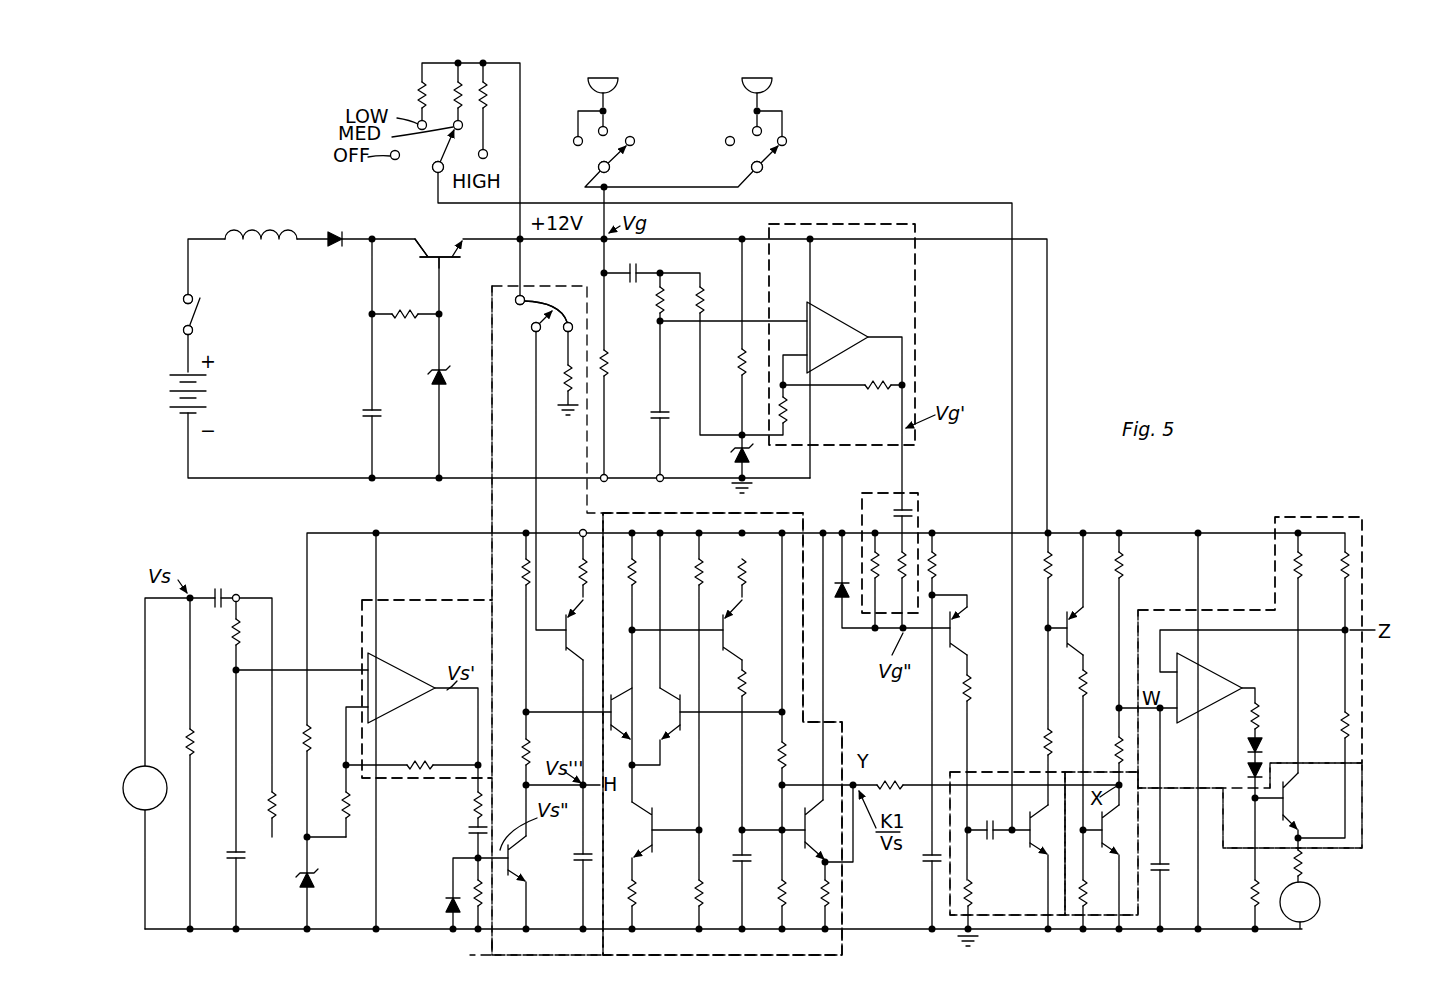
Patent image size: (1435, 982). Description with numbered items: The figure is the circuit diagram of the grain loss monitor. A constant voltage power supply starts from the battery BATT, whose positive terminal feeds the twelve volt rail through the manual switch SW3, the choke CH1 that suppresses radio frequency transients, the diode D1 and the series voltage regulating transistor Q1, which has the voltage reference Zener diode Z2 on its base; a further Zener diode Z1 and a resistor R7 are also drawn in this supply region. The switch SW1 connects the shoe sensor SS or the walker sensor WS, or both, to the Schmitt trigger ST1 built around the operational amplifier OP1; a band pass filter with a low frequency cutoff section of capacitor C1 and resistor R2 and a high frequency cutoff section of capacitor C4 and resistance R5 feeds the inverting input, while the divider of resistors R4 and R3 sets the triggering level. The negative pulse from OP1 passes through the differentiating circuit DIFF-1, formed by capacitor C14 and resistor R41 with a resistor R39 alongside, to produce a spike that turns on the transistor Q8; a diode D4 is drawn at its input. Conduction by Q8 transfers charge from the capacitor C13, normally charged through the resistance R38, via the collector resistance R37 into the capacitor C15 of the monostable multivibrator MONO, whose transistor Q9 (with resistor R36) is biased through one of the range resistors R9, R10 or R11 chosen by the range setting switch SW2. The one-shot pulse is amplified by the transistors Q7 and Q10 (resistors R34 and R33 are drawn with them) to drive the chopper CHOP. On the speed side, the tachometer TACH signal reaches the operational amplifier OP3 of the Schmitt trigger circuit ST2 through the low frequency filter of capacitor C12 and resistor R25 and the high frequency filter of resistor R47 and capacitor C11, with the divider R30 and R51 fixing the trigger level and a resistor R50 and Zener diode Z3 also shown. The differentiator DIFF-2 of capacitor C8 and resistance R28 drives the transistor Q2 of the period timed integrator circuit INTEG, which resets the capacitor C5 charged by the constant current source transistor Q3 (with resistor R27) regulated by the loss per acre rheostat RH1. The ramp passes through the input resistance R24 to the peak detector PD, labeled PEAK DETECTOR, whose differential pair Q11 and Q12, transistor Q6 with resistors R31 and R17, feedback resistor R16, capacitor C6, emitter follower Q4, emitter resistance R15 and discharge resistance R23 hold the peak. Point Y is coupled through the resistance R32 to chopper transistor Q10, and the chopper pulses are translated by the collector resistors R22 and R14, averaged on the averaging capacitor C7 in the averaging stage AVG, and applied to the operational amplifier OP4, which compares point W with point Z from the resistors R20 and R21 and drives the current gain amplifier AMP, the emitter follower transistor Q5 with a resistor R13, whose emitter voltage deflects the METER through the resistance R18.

The range resistor R11 is at (420, 92).
The range resistor R10 is at (460, 92).
The range resistor R9 is at (498, 88).
The range setting switch SW2 is at (434, 170).
The shoe sensor SS is at (618, 80).
The walker sensor WS is at (772, 80).
The sensor selector switch SW1 is at (770, 152).
The choke CH1 is at (255, 232).
The diode D1 is at (334, 231).
The series voltage regulating transistor Q1 is at (438, 240).
The manual switch SW3 is at (197, 316).
The unidirectional voltage source BATT is at (218, 394).
The voltage reference Zener diode Z2 is at (443, 385).
The loss per acre setting rheostat RH1 is at (532, 295).
The capacitor C1 is at (632, 262).
The resistor R2 is at (704, 290).
The resistance R5 is at (657, 312).
The capacitor C4 is at (655, 412).
The resistor R7 is at (738, 362).
The Zener diode Z1 is at (735, 455).
The operational amplifier OP1 is at (837, 337).
The feedback resistor R4 is at (869, 372).
The divider resistor R3 is at (790, 413).
The Schmitt trigger ST1 is at (916, 305).
The capacitor C14 is at (900, 506).
The differentiating circuit DIFF-1 is at (926, 544).
The resistor R39 is at (843, 541).
The resistor R41 is at (910, 552).
The resistance R38 is at (938, 563).
The transistor Q8 is at (971, 631).
The collector resistance R37 is at (962, 698).
The diode D4 is at (840, 606).
The collector resistor R14 is at (1123, 560).
The transistor Q7 is at (1082, 631).
The resistor R34 is at (1086, 676).
The collector resistor R22 is at (1116, 750).
The averaging circuit AVG is at (1228, 601).
The operational amplifier OP4 is at (1209, 688).
The resistor R20 is at (1352, 562).
The resistor R21 is at (1352, 726).
The emitter follower transistor Q5 is at (1307, 801).
The current gain amplifier AMP is at (1362, 788).
The resistance R18 is at (1305, 866).
The meter METER is at (1320, 902).
The resistor R13 is at (1234, 903).
The averaging capacitor C7 is at (1164, 862).
The chopper transistor Q10 is at (1107, 844).
The chopper CHOP is at (1101, 869).
The resistor R33 is at (1080, 895).
The monostable multivibrator MONO is at (1007, 844).
The resistor R36 is at (972, 890).
The NPN transistor Q9 is at (1019, 837).
The capacitor C15 is at (988, 824).
The capacitor C13 is at (928, 866).
The peak detector PD is at (843, 884).
The emitter resistance R15 is at (835, 905).
The resistance R23 is at (767, 903).
The capacitor C6 is at (754, 847).
The emitter follower transistor Q4 is at (792, 829).
The feedback resistor R16 is at (767, 768).
The resistor R17 is at (724, 693).
The transistor Q6 is at (749, 630).
The resistor R31 is at (745, 580).
The transistor Q12 is at (690, 692).
The transistor Q11 is at (641, 713).
The PNP transistor Q3 is at (583, 630).
The resistor R27 is at (588, 580).
The input resistance R24 is at (552, 735).
The capacitor C5 is at (582, 853).
The NPN transistor Q2 is at (520, 870).
The resistance R28 is at (470, 805).
The capacitor C8 is at (470, 832).
The feedback resistor R30 is at (416, 753).
The operational amplifier OP3 is at (401, 688).
The resistor R50 is at (311, 727).
The divider resistor R51 is at (331, 813).
The resistor R25 is at (270, 825).
The Zener diode Z3 is at (312, 882).
The capacitor C11 is at (240, 862).
The capacitor C12 is at (232, 580).
The resistor R47 is at (218, 645).
The tachometer TACH is at (149, 788).
The Schmitt trigger circuit ST2 is at (436, 603).
The differentiator DIFF-2 is at (468, 948).
The period timed integrator circuit INTEG is at (547, 626).
The peak detector PEAK DETECTOR is at (722, 739).
The resistance R32 is at (895, 778).